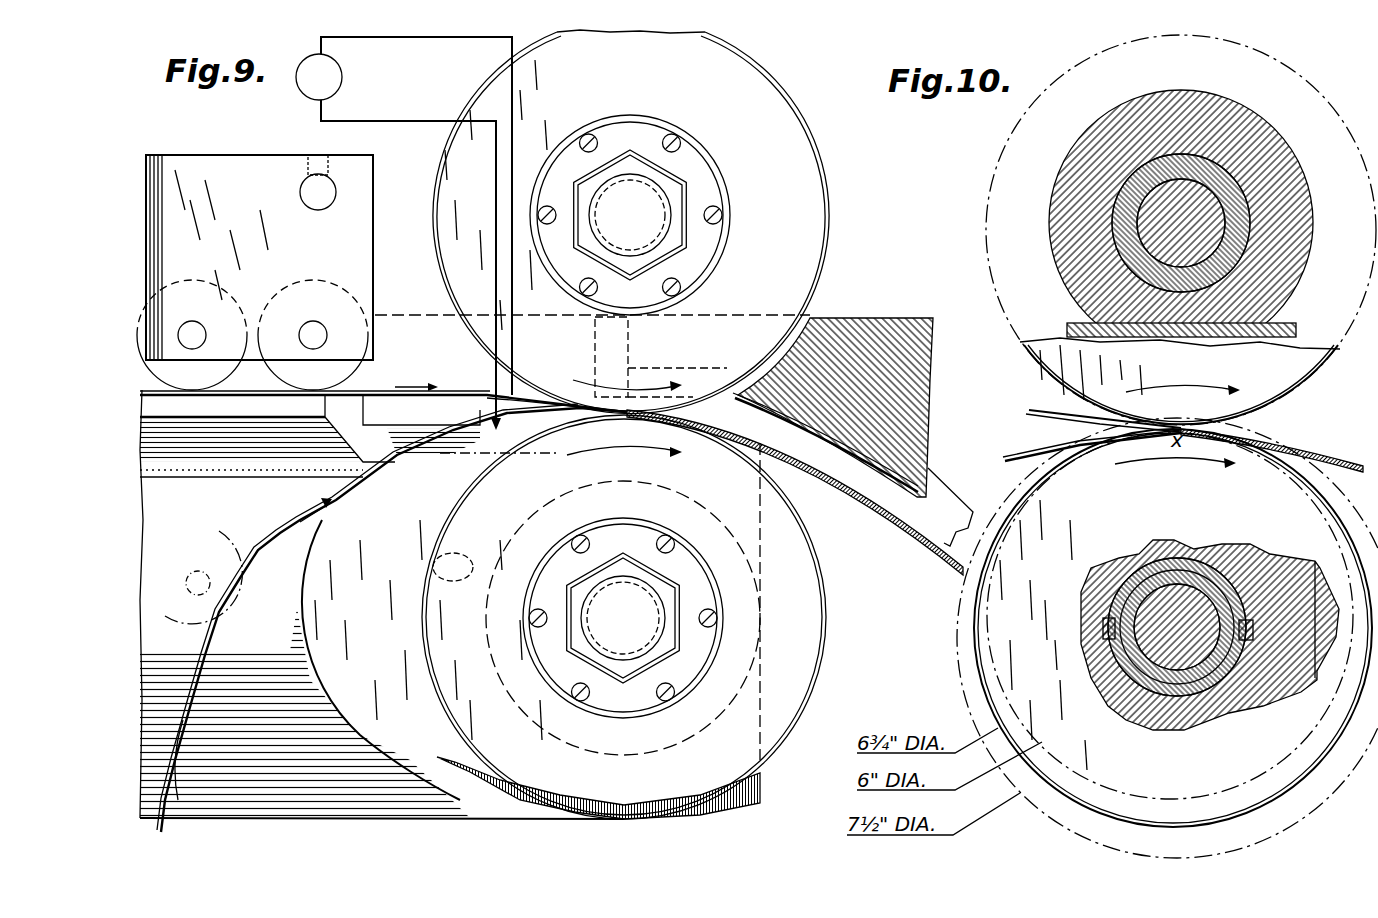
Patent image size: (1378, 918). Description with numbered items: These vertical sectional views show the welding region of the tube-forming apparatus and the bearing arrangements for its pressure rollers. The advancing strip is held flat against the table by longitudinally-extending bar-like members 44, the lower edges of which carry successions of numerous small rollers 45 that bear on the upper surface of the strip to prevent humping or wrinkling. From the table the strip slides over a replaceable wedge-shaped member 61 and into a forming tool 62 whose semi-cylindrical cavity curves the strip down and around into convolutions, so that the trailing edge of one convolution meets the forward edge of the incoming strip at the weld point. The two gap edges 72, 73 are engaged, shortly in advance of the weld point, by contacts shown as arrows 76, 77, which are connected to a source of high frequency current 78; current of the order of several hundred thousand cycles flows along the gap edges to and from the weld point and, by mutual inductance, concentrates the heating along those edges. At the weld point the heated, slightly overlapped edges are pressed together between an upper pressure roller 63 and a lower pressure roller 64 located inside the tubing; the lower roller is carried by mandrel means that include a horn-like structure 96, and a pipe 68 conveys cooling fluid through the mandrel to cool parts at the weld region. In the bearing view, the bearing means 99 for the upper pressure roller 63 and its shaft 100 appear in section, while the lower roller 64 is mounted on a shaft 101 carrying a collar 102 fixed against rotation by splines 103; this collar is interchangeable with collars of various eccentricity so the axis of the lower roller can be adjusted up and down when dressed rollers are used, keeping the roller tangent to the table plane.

In FIG. 9, the bar-like members 44 is at (205, 168).
In FIG. 9, the small rollers 45 is at (287, 372).
In FIG. 9, the wedge-shaped member 61 is at (371, 420).
In FIG. 9, the forming tool 62 is at (838, 330).
In FIG. 9, the upper pressure roller 63 is at (830, 241).
In FIG. 10, the upper pressure roller 63 is at (1291, 382).
In FIG. 9, the lower pressure roller 64 is at (826, 580).
In FIG. 10, the lower pressure roller 64 is at (1305, 518).
In FIG. 9, the pipe 68 is at (432, 571).
In FIG. 9, the strip edge 72 is at (443, 392).
In FIG. 10, the strip edge 72 is at (1053, 411).
In FIG. 9, the strip edge 73 is at (419, 459).
In FIG. 10, the strip edge 73 is at (1017, 451).
In FIG. 9, the contact 76 is at (477, 420).
In FIG. 9, the contact 77 is at (508, 392).
In FIG. 9, the source of high frequency current 78 is at (343, 77).
In FIG. 9, the horn-like structure 96 is at (243, 451).
In FIG. 10, the bearing means 99 is at (1315, 240).
In FIG. 10, the shaft 100 is at (1208, 202).
In FIG. 10, the shaft 101 is at (1148, 596).
In FIG. 10, the collar 102 is at (1181, 568).
In FIG. 10, the splines 103 is at (1246, 621).